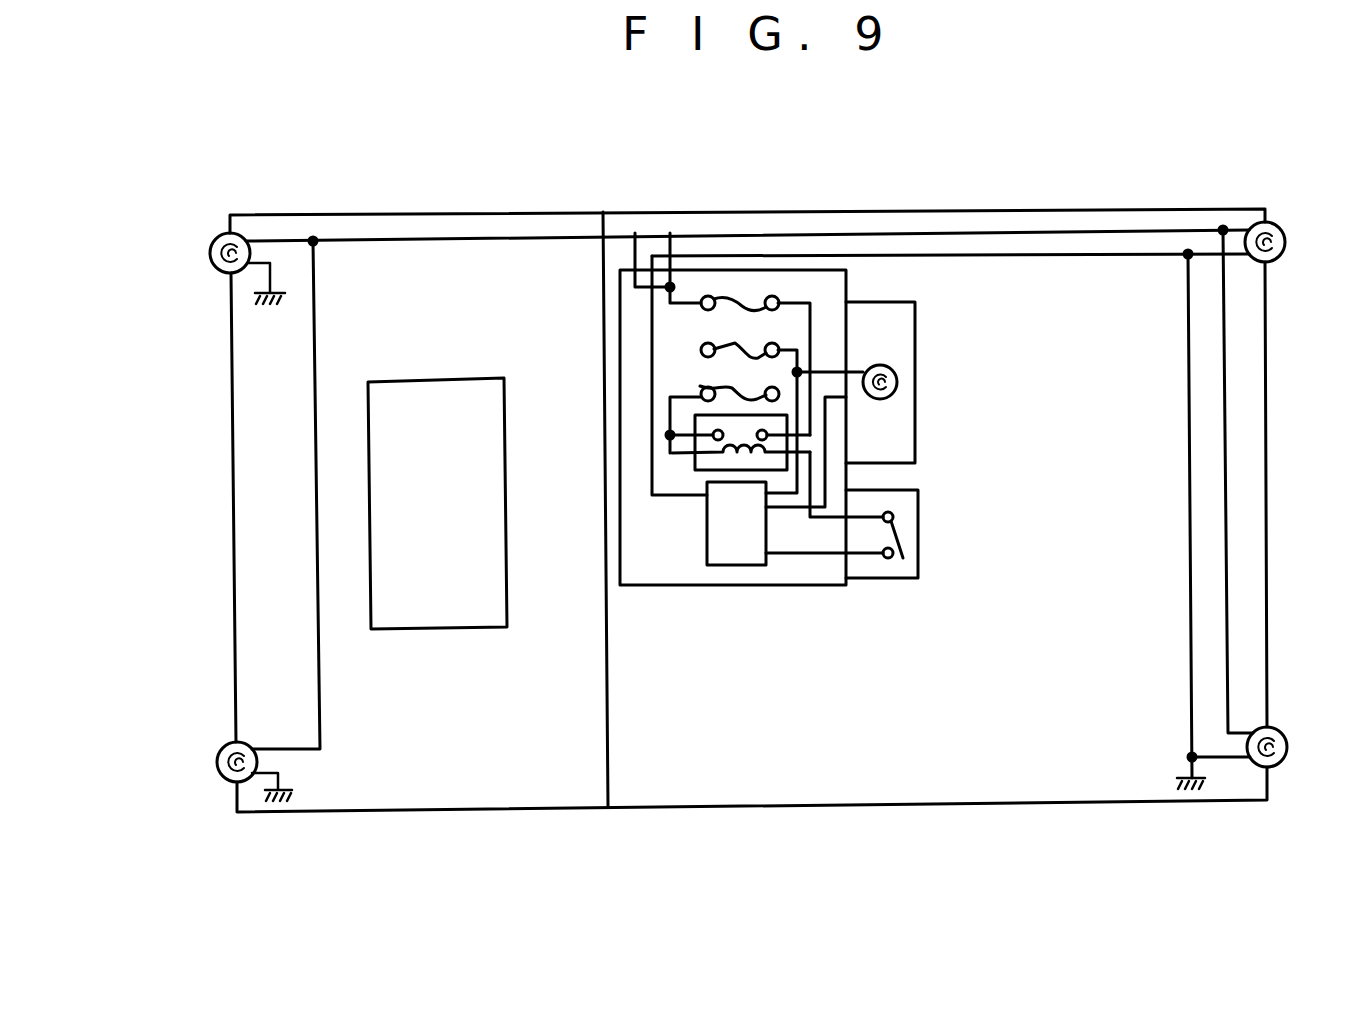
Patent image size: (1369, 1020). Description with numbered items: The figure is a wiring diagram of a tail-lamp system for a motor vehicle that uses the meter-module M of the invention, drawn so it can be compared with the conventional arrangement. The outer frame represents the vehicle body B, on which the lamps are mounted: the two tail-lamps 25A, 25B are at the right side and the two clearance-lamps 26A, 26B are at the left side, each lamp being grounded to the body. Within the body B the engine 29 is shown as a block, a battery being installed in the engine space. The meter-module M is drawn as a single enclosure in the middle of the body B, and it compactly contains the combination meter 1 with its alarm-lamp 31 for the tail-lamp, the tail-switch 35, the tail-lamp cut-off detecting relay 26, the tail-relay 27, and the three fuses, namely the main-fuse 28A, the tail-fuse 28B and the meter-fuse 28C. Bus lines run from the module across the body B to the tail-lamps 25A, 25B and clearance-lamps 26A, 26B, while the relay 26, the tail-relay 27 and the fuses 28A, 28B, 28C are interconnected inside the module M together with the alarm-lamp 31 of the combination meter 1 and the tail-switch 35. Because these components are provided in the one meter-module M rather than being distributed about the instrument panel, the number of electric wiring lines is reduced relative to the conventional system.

The body B is at (1029, 805).
The clearance-lamp 26A is at (213, 240).
The clearance-lamp 26B is at (217, 765).
The tail-lamp 25A is at (1276, 222).
The tail-lamp 25B is at (1287, 741).
The combination meter 1 is at (898, 301).
The meter-module M is at (817, 587).
The tail-lamp cut-off detecting relay 26 is at (705, 540).
The engine 29 is at (438, 630).
The tail-relay 27 is at (695, 462).
The main-fuse 28A is at (700, 386).
The tail-fuse 28B is at (728, 297).
The meter-fuse 28C is at (742, 342).
The alarm-lamp 31 is at (898, 384).
The tail-switch 35 is at (903, 538).